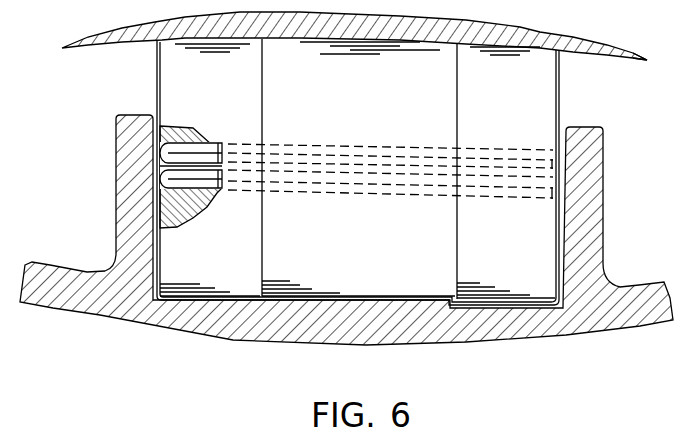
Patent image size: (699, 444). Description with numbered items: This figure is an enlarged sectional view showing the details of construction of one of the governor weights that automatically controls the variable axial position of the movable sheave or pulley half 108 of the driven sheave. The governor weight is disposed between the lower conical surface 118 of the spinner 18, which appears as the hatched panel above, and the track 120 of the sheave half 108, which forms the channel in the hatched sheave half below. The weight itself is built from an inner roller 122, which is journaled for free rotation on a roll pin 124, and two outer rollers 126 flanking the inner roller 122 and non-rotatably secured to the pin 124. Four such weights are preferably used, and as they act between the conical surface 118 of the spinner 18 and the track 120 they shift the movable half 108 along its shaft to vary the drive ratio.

The spinner 18 is at (491, 20).
The lower conical surface 118 is at (622, 61).
The movable sheave or pulley half 108 is at (62, 302).
The track 120 is at (291, 300).
The inner roller 122 is at (381, 106).
The outer rollers 126 is at (218, 101).
The roll pin 124 is at (208, 186).